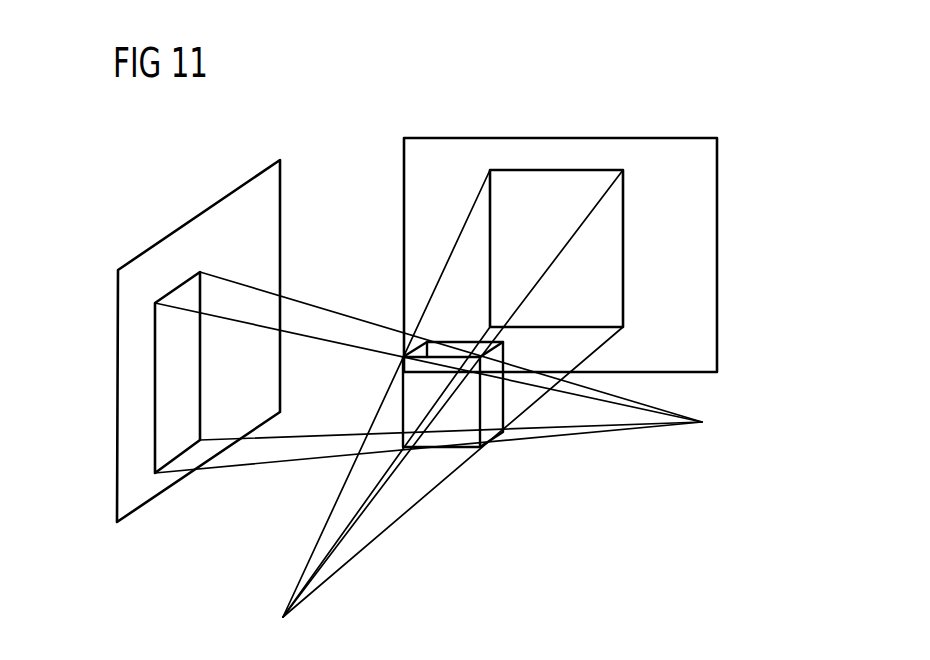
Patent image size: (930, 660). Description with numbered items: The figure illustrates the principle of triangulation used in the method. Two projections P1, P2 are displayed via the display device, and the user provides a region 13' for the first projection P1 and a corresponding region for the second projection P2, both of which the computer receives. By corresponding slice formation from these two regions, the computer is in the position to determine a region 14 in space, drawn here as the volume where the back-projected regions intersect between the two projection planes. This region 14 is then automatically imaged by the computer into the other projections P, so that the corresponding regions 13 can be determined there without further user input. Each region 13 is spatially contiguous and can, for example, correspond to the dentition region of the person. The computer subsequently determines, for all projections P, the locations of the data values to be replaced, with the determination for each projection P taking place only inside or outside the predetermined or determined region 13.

The projection P is at (188, 341).
The first projection P1 is at (172, 236).
The region 13 is at (118, 372).
The region for first projection 13' is at (118, 372).
The region in space 14 is at (480, 400).
The second projection P2 is at (572, 137).